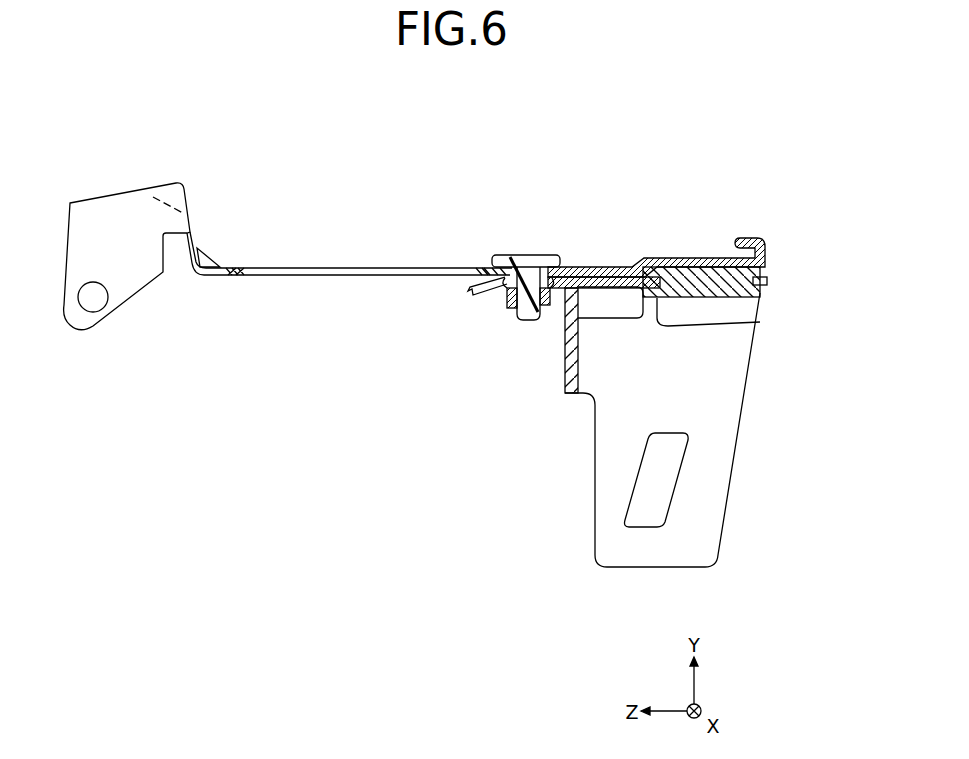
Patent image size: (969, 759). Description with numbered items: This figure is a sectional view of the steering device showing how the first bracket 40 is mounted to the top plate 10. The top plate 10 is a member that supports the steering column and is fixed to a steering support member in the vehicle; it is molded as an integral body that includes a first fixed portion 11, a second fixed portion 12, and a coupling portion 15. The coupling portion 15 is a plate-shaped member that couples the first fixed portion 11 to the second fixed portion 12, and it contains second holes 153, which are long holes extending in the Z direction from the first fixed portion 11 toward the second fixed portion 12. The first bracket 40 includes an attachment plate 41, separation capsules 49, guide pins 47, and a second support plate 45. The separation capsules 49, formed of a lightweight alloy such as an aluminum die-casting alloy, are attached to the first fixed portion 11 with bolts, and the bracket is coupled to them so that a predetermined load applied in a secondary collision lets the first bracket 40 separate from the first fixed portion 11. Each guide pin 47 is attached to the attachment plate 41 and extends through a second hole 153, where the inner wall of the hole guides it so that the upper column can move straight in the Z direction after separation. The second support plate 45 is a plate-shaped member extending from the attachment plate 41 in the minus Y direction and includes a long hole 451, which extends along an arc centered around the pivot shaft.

The top plate 10 is at (768, 218).
The first fixed portion 11 is at (706, 256).
The second fixed portion 12 is at (117, 188).
The coupling portion 15 is at (240, 267).
The second hole 153 is at (380, 269).
The guide pin 47 is at (520, 255).
The separation capsule 49 is at (761, 293).
The attachment plate 41 is at (760, 322).
The second support plate 45 is at (735, 368).
The first bracket 40 is at (749, 423).
The long hole 451 is at (674, 489).